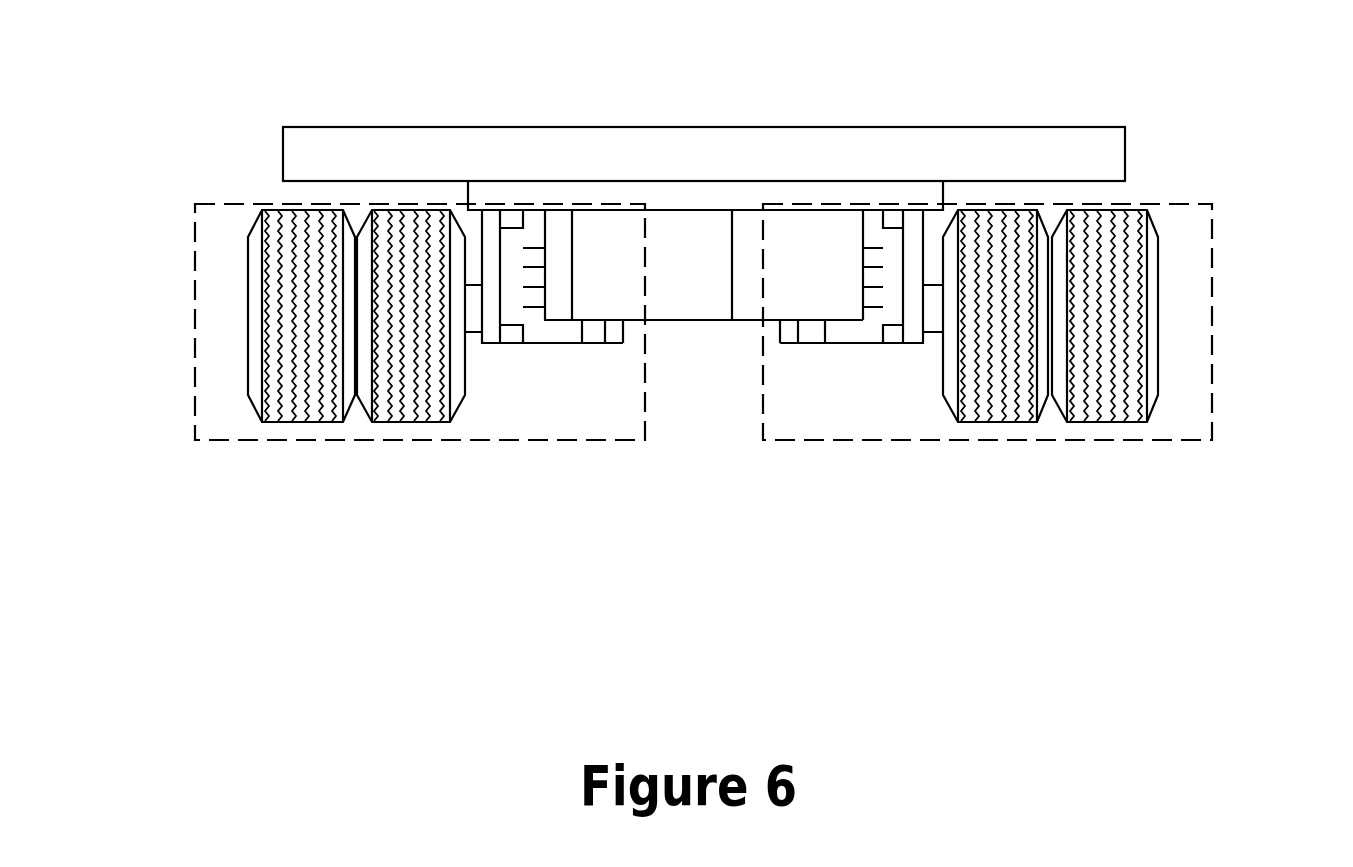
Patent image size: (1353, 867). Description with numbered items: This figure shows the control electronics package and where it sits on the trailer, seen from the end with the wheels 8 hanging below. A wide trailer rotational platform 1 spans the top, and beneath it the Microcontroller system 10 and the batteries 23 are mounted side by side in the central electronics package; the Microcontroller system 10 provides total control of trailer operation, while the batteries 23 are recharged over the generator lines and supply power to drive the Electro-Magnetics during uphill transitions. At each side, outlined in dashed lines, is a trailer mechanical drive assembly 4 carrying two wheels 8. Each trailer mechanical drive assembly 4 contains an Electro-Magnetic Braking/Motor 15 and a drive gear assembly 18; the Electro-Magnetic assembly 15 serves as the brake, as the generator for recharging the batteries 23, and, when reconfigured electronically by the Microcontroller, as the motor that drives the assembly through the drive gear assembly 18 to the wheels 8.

The trailer rotational platform 1 is at (704, 101).
The trailer mechanical drive assembly 4 is at (710, 249).
The wheel 8 is at (712, 379).
The Microcontroller system 10 is at (693, 166).
The Electro-Magnetic Braking/Motor 15 is at (711, 414).
The drive gear assembly 18 is at (771, 379).
The batteries 23 is at (845, 166).